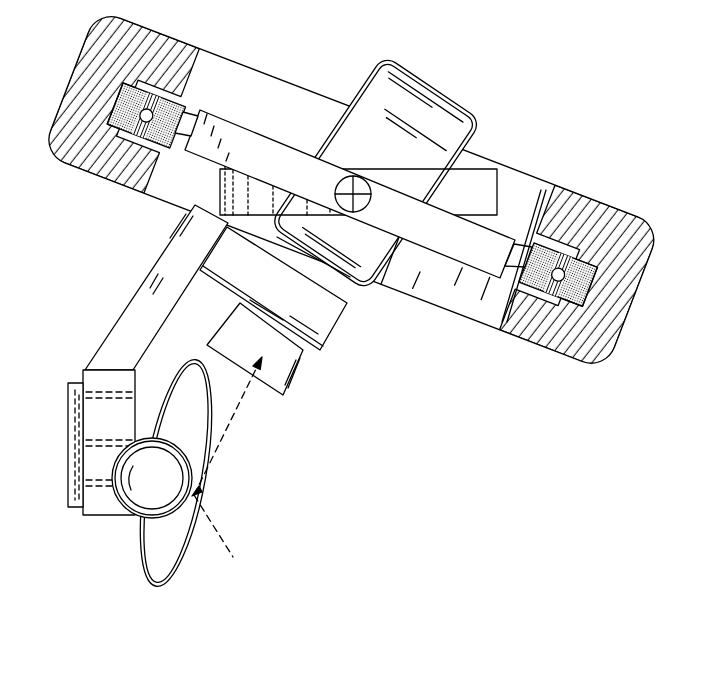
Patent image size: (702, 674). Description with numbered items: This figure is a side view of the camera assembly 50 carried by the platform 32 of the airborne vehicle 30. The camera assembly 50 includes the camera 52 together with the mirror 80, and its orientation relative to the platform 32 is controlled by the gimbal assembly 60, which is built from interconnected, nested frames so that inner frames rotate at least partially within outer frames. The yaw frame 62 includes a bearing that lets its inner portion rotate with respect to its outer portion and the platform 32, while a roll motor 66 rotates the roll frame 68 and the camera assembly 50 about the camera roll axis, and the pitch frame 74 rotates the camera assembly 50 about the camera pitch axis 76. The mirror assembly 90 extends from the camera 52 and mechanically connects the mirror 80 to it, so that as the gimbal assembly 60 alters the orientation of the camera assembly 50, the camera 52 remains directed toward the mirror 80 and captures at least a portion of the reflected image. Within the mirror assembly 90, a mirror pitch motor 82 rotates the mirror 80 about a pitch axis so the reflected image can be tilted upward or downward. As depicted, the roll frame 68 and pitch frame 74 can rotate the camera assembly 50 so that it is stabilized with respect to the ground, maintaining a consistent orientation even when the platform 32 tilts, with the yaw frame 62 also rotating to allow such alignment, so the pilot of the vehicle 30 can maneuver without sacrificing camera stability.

The vehicle 30 is at (567, 55).
The platform 32 is at (170, 38).
The camera assembly 50 is at (434, 86).
The camera 52 is at (262, 388).
The gimbal assembly 60 is at (509, 236).
The yaw frame 62 is at (519, 283).
The roll motor 66 is at (197, 108).
The roll frame 68 is at (441, 250).
The pitch frame 74 is at (483, 168).
The camera pitch axis 76 is at (362, 188).
The mirror 80 is at (188, 540).
The mirror pitch motor 82 is at (134, 517).
The mirror assembly 90 is at (68, 444).